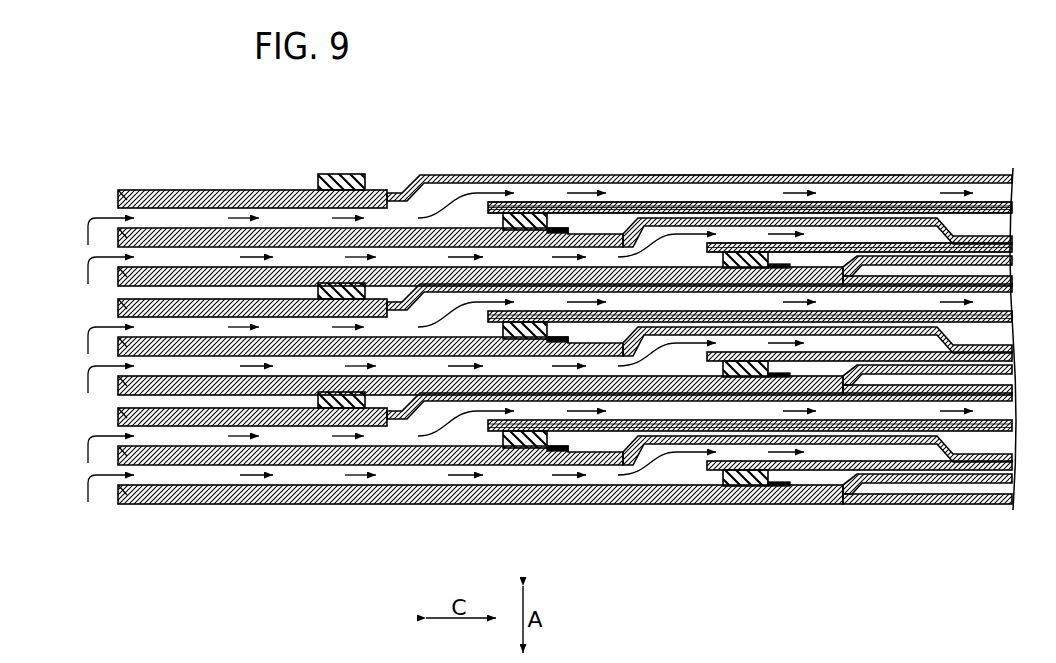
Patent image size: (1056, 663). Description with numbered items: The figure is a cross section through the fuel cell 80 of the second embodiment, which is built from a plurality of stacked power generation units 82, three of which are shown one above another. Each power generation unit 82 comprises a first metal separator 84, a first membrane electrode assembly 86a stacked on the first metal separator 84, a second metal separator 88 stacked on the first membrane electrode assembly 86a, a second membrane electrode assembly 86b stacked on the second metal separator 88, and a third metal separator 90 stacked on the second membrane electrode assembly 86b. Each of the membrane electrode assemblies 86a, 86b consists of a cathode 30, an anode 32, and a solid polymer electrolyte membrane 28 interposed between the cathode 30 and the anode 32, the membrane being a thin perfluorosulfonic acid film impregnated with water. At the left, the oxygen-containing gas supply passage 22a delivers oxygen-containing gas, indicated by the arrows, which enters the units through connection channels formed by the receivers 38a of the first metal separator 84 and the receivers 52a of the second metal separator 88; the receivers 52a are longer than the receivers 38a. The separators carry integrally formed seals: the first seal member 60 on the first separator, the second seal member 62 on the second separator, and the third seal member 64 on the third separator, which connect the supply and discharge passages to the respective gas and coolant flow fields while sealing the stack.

The oxygen-containing gas supply passage 22a is at (59, 392).
The solid polymer electrolyte membrane 28 is at (685, 206).
The cathode 30 is at (650, 201).
The anode 32 is at (724, 211).
The receivers 38a is at (668, 295).
The receivers 52a is at (840, 487).
The first seal member 60 is at (147, 189).
The second seal member 62 is at (177, 227).
The third seal member 64 is at (215, 266).
The fuel cell 80 is at (495, 99).
The power generation unit 82 is at (905, 92).
The first metal separator 84 is at (593, 171).
The first membrane electrode assembly 86a is at (650, 134).
The second membrane electrode assembly 86b is at (842, 134).
The second metal separator 88 is at (784, 240).
The third metal separator 90 is at (843, 256).